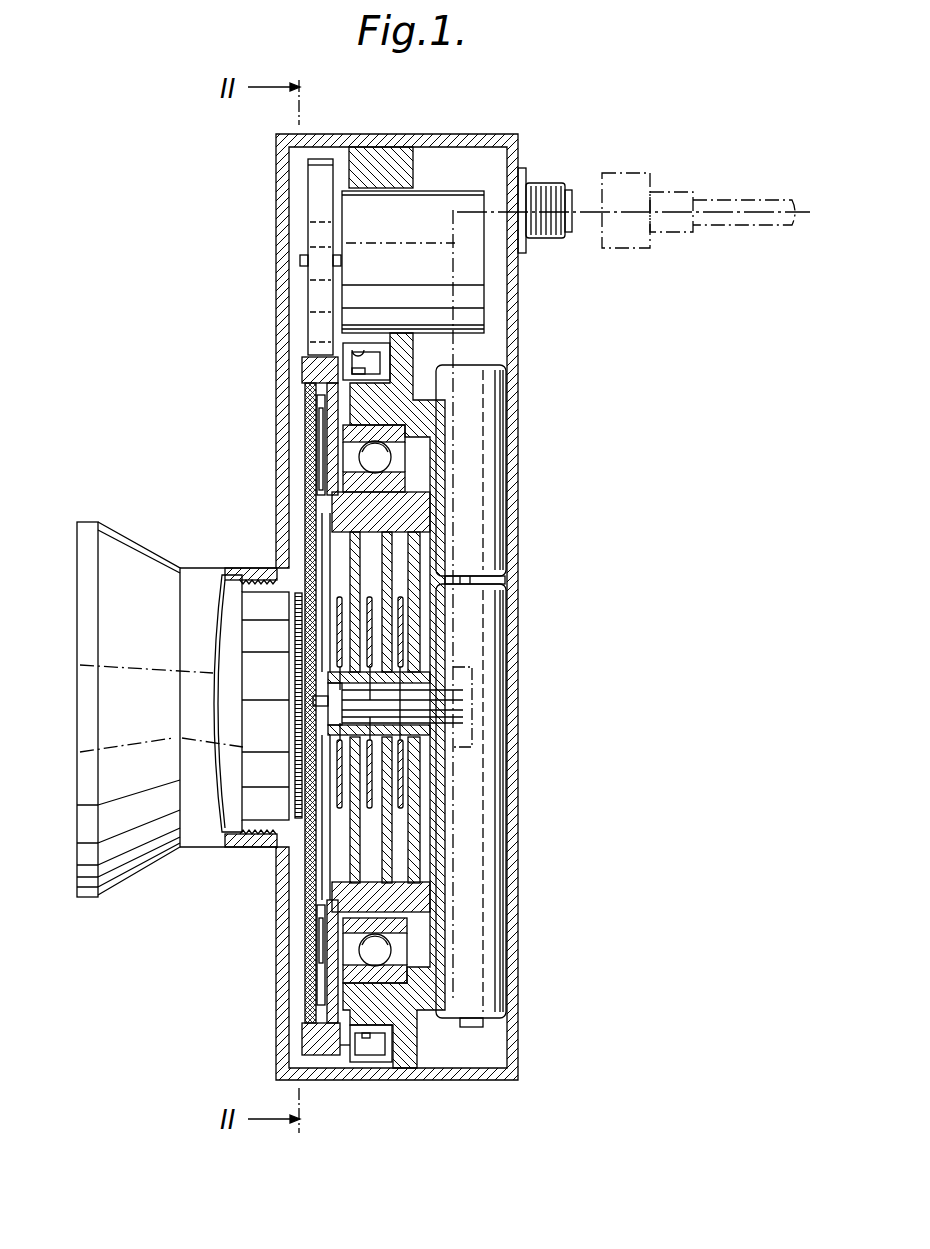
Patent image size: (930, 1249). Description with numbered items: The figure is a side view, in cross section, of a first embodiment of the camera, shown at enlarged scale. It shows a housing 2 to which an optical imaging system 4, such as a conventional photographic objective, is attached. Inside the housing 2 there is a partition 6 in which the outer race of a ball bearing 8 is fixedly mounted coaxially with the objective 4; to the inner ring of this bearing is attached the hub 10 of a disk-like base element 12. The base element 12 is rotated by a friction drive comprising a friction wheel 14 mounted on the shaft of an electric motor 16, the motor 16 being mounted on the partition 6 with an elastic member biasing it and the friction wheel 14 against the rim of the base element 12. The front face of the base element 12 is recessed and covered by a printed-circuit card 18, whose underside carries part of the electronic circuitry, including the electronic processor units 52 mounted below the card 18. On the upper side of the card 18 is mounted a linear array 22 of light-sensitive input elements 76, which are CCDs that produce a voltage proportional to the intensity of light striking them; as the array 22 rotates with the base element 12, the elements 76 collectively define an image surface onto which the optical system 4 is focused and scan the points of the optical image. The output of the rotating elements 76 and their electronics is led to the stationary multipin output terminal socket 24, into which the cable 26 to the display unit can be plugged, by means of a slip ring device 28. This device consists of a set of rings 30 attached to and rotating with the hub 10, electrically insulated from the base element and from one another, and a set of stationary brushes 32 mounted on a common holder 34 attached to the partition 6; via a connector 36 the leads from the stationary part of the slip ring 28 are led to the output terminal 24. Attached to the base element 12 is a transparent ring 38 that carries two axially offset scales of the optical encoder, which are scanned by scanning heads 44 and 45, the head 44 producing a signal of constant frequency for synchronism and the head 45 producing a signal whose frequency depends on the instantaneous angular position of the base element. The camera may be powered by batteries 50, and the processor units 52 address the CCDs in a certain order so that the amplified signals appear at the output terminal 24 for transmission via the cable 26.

The housing 2 is at (284, 183).
The optical imaging system 4 is at (128, 550).
The partition 6 is at (382, 160).
The ball bearing 8 is at (397, 952).
The hub 10 is at (415, 507).
The base element 12 is at (310, 370).
The friction wheel 14 is at (317, 208).
The electric motor 16 is at (445, 200).
The printed-circuit card 18 is at (308, 497).
The array of light-sensitive input elements 22 is at (291, 737).
The multipin output terminal socket 24 is at (551, 183).
The cable 26 is at (751, 199).
The slip ring device 28 is at (368, 590).
The set of rings 30 is at (390, 577).
The stationary brushes 32 is at (403, 813).
The common holder 34 is at (355, 672).
The connector 36 is at (473, 740).
The ring 38 is at (372, 360).
The scanning head 44 is at (392, 1046).
The scanning head 45 is at (352, 353).
The batteries 50 is at (473, 988).
The electronic processor units 52 is at (321, 437).
The light-sensitive input elements 76 is at (299, 627).